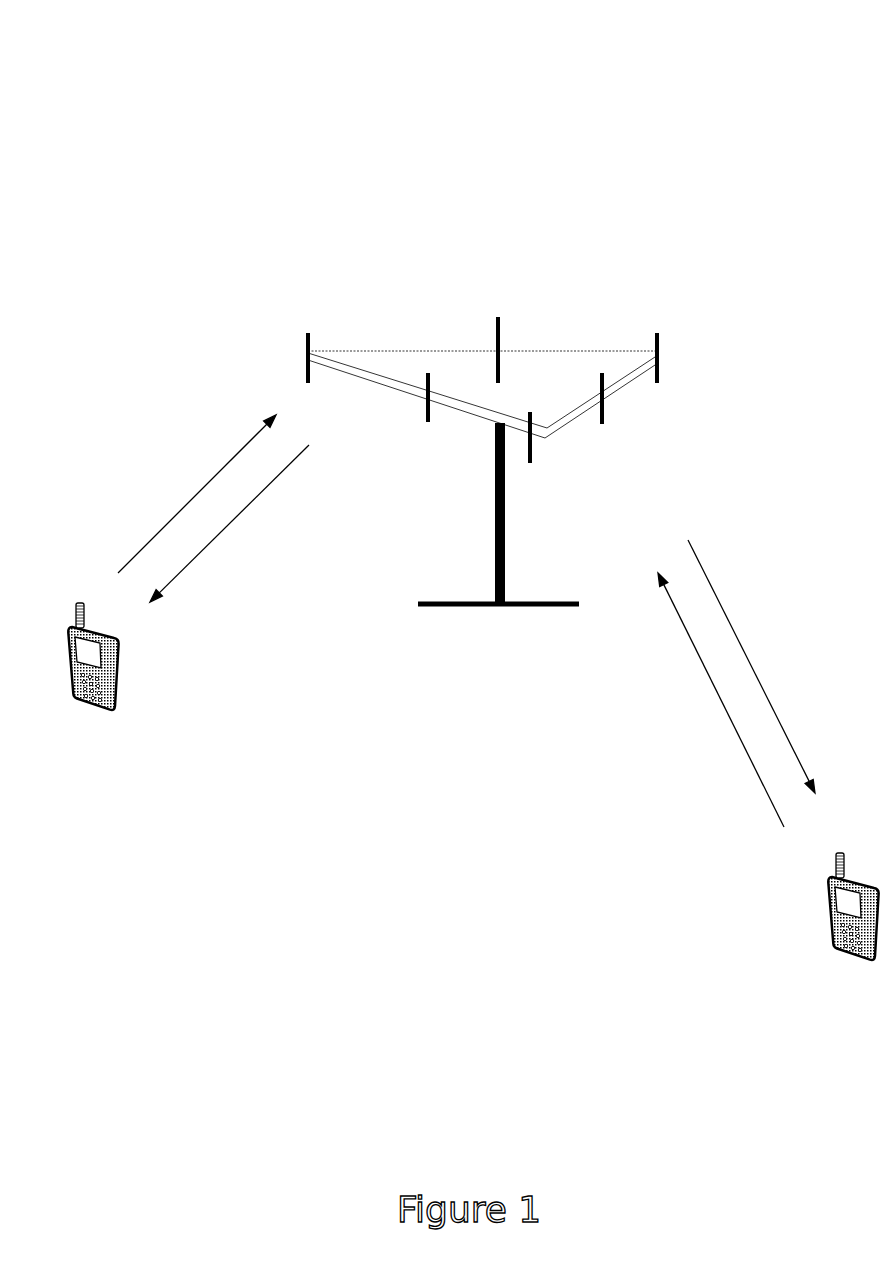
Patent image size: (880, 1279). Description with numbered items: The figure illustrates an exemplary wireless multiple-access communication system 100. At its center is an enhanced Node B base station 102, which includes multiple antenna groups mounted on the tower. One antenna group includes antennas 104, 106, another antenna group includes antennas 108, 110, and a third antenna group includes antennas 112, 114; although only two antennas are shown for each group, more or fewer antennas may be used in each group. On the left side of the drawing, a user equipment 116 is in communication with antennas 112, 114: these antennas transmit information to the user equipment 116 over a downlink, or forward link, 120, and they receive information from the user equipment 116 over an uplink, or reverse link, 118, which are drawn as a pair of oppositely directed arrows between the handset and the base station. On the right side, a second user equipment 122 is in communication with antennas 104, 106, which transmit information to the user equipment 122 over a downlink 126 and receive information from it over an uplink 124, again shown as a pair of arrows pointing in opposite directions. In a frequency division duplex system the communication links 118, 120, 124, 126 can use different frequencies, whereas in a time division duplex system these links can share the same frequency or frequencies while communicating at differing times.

The wireless multiple-access communication system 100 is at (758, 96).
The enhanced Node B (eNB) base station 102 is at (468, 606).
The antenna 104 is at (531, 457).
The antenna 106 is at (603, 418).
The antenna 108 is at (658, 373).
The antenna 110 is at (499, 322).
The antenna 112 is at (307, 338).
The antenna 114 is at (428, 418).
The user equipment (UE) 116 is at (117, 707).
The uplink (reverse link) 118 is at (200, 485).
The downlink (forward link) 120 is at (180, 573).
The user equipment (UE) 122 is at (832, 947).
The uplink 124 is at (707, 675).
The downlink 126 is at (738, 637).